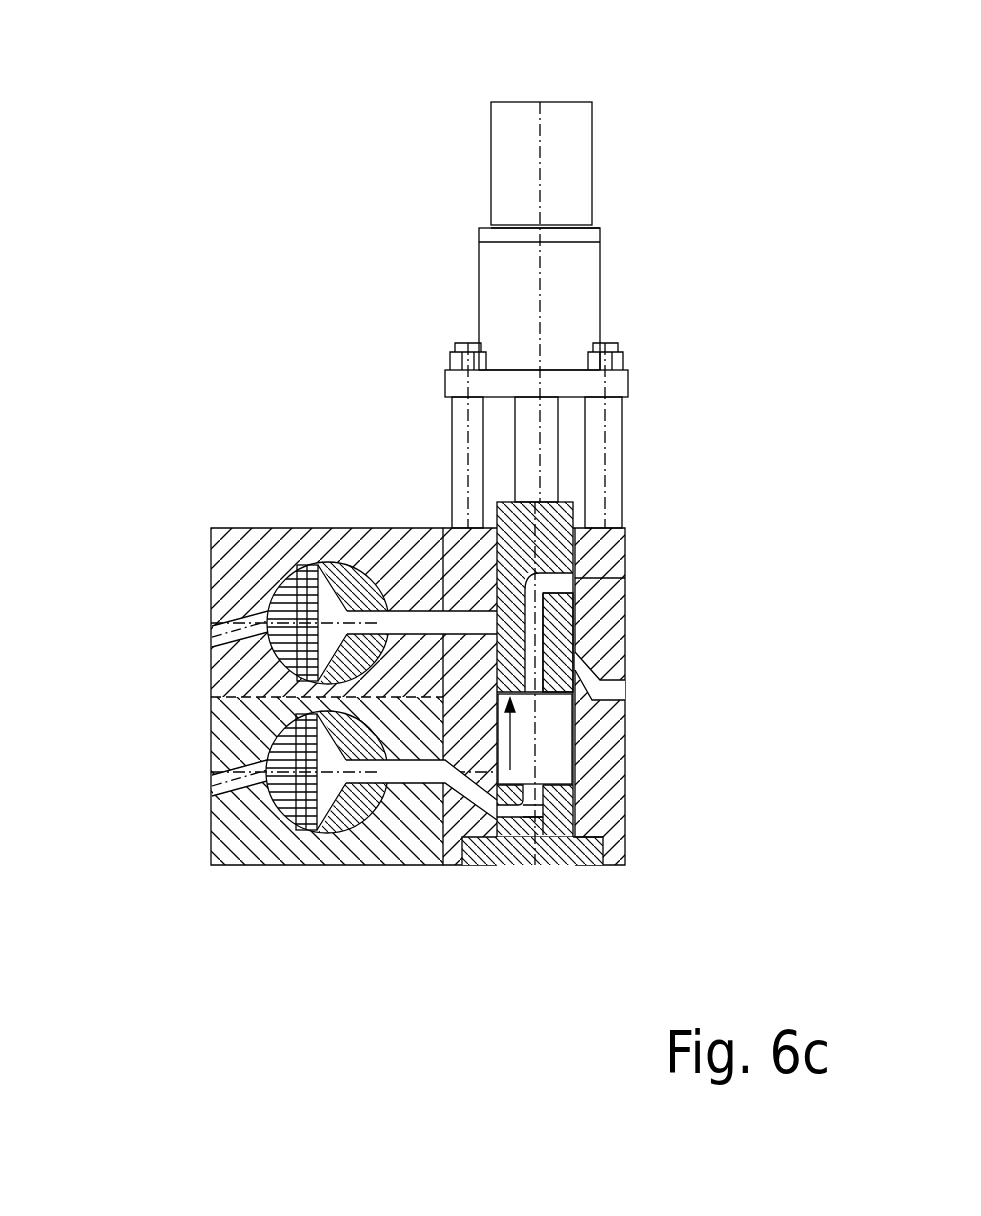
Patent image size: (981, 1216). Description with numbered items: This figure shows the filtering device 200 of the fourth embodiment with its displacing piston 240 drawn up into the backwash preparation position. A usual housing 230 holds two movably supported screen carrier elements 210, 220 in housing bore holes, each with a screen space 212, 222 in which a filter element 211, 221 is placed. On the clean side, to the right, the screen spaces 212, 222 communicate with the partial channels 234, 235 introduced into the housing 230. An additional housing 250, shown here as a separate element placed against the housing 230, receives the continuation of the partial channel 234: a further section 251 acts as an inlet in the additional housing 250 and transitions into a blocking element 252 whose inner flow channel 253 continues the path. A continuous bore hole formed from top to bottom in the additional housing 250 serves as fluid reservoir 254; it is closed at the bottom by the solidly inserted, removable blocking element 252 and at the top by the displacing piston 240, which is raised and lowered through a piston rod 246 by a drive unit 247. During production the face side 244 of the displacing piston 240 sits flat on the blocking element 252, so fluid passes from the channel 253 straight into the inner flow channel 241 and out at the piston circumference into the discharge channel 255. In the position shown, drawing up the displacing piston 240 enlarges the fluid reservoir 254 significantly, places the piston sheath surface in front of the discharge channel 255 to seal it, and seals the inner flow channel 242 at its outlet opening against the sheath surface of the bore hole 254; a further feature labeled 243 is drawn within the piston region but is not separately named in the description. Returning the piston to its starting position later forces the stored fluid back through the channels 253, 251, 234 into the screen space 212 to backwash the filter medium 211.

The filtering device 200 is at (127, 115).
The screen carrier element 210 is at (348, 833).
The filter element 211 is at (296, 832).
The screen space 212 is at (262, 762).
The screen carrier element 220 is at (345, 565).
The filter element 221 is at (305, 566).
The screen space 222 is at (265, 625).
The housing 230 is at (211, 530).
The partial channel 234 is at (400, 840).
The partial channel 235 is at (420, 611).
The displacing piston 240 is at (575, 532).
The inner flow channel 241 is at (553, 755).
The inner flow channel 242 is at (530, 612).
The transverse bore 243 is at (545, 574).
The face side 244 is at (503, 868).
The piston rod 246 is at (538, 445).
The drive unit 247 is at (548, 263).
The additional housing 250 is at (610, 652).
The section of the partial channel 251 is at (462, 848).
The blocking element 252 is at (625, 858).
The inner flow channel 253 is at (530, 868).
The fluid reservoir 254 is at (600, 842).
The discharge channel 255 is at (600, 702).